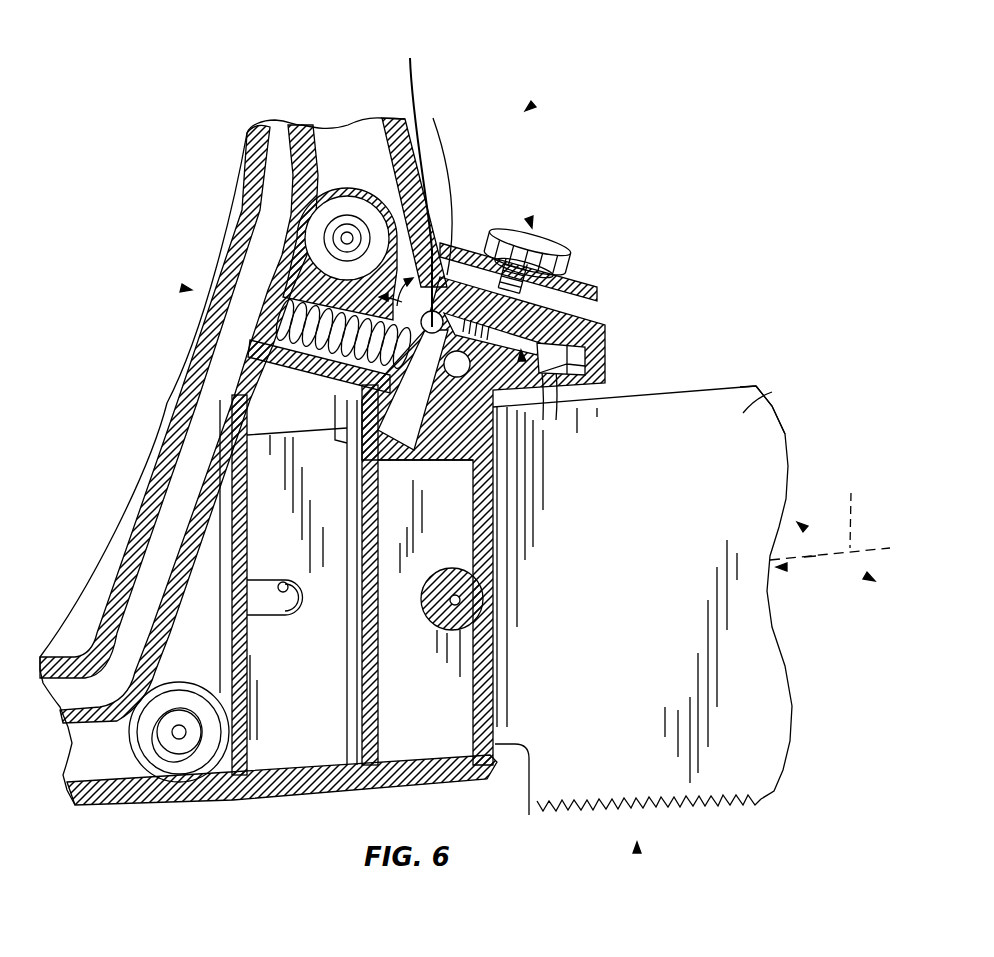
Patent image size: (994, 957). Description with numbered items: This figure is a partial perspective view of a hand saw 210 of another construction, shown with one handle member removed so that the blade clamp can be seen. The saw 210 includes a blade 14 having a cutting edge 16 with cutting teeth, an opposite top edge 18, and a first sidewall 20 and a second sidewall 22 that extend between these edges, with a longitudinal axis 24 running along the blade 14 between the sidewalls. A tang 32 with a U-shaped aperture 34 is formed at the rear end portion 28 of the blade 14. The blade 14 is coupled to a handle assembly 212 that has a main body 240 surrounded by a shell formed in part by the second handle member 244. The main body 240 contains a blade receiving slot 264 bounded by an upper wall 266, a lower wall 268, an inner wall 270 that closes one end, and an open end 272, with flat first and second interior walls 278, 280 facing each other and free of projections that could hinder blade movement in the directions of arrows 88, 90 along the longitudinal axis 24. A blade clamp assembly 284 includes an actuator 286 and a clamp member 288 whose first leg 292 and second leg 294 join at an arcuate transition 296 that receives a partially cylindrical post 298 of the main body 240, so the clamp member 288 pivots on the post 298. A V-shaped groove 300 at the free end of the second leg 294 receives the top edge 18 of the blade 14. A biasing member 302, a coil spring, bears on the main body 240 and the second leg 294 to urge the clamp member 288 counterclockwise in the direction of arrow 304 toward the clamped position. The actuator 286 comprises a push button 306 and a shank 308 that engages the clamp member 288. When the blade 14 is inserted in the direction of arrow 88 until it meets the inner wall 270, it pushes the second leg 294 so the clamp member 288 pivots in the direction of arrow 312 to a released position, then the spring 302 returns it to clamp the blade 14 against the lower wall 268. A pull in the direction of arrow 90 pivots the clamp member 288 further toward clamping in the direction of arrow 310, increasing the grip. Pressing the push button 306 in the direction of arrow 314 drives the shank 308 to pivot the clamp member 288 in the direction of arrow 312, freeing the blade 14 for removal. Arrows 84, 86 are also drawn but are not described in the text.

The blade 14 is at (637, 852).
The cutting edge 16 is at (717, 800).
The top edge 18 is at (712, 392).
The first sidewall 20 is at (745, 413).
The second sidewall 22 is at (737, 386).
The longitudinal axis 24 is at (830, 514).
The rear end portion 28 is at (513, 735).
The tang 32 is at (323, 745).
The U-shaped aperture 34 is at (285, 581).
The direction 84 is at (805, 529).
The direction 86 is at (866, 577).
The arrow 88 is at (786, 567).
The arrow 90 is at (810, 590).
The saw 210 is at (528, 106).
The handle assembly 212 is at (338, 92).
The main body 240 is at (187, 480).
The second handle member 244 is at (233, 227).
The blade receiving slot 264 is at (590, 390).
The upper wall 266 is at (577, 434).
The lower wall 268 is at (293, 770).
The inner wall 270 is at (248, 652).
The open end 272 is at (611, 382).
The first interior wall 278 is at (343, 600).
The second interior wall 280 is at (300, 425).
The blade clamp assembly 284 is at (597, 258).
The actuator 286 is at (493, 222).
The clamp member 288 is at (521, 360).
The first leg 292 is at (578, 446).
The second leg 294 is at (437, 437).
The arcuate transition 296 is at (448, 256).
The post 298 is at (437, 185).
The V-shaped groove 300 is at (383, 465).
The biasing member 302 is at (277, 358).
The arrow 304 is at (182, 288).
The push button 306 is at (553, 255).
The shank 308 is at (583, 297).
The arrow 310 is at (384, 212).
The arrow 312 is at (417, 182).
The arrow 314 is at (531, 220).